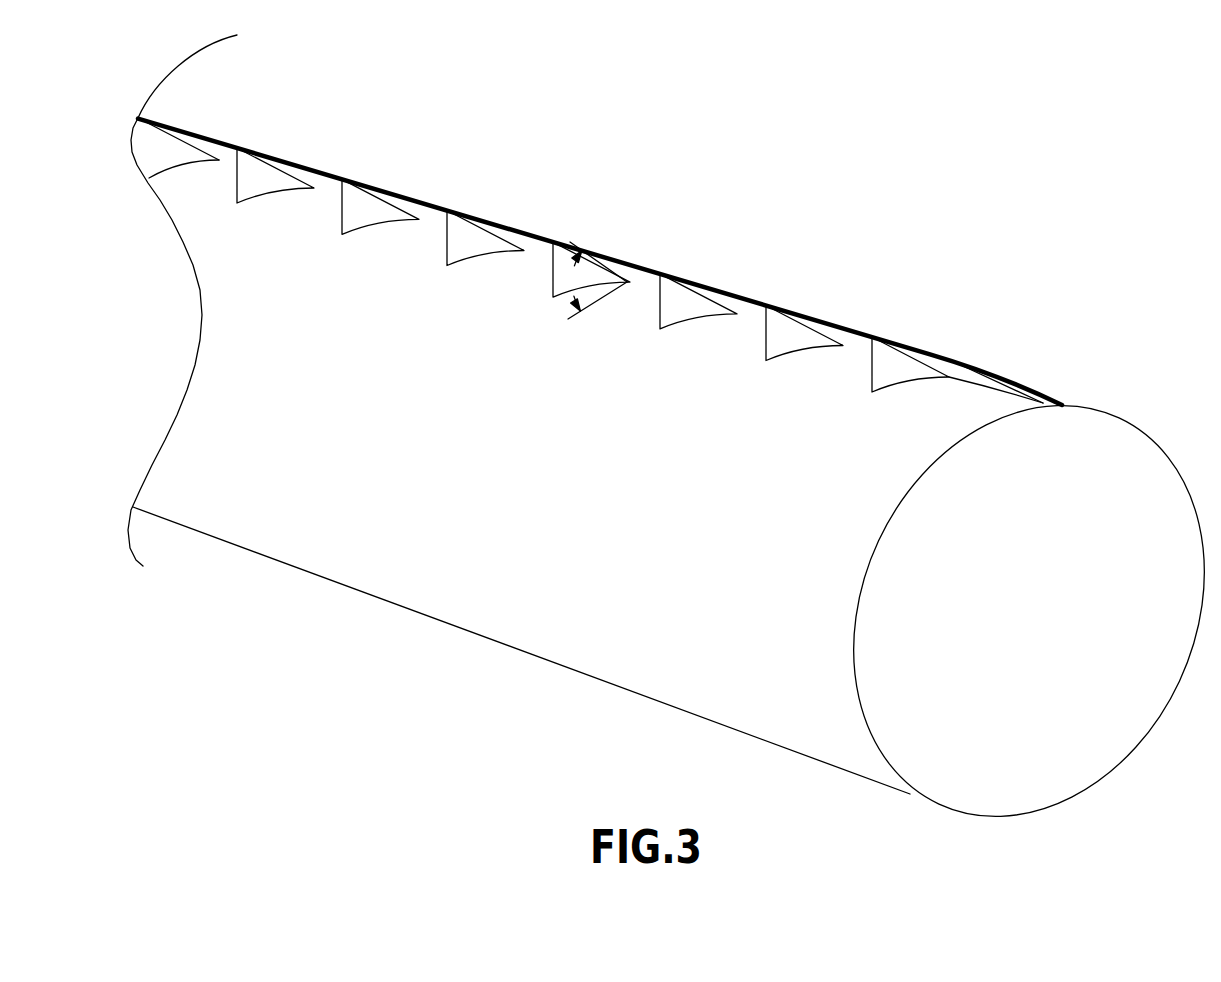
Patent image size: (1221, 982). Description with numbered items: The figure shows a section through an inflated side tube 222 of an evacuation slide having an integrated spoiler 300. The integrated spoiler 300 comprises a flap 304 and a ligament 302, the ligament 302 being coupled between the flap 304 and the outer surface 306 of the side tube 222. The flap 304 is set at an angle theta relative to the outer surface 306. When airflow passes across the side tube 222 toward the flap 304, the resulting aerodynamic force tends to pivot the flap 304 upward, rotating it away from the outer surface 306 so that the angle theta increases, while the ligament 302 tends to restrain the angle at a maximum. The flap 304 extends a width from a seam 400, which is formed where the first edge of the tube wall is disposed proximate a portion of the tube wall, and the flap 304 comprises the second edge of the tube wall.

The side tube 222 is at (591, 236).
The integrated spoiler 300 is at (832, 322).
The ligament 302 is at (878, 368).
The flap 304 is at (750, 305).
The outer surface 306 is at (506, 447).
The seam 400 is at (643, 285).